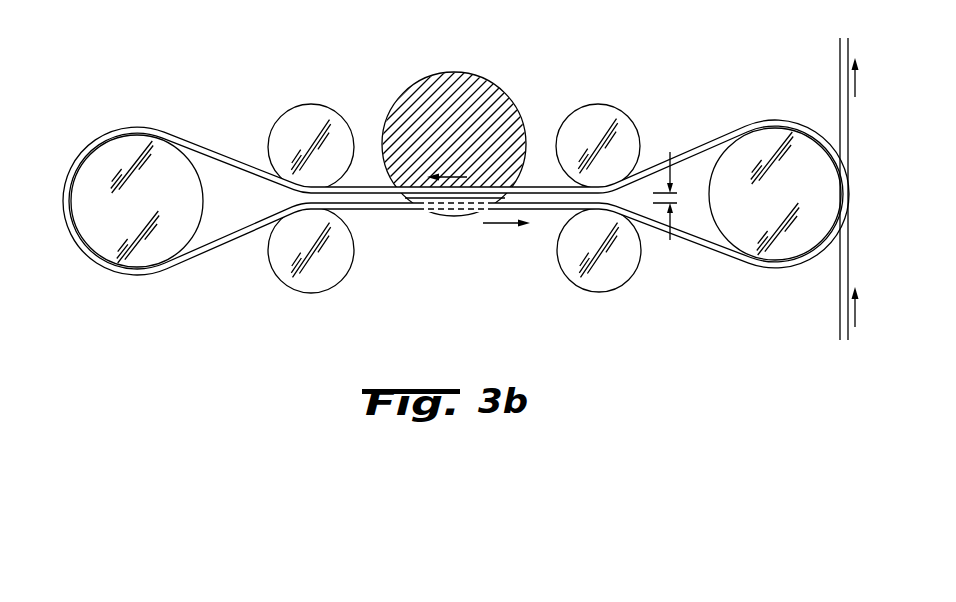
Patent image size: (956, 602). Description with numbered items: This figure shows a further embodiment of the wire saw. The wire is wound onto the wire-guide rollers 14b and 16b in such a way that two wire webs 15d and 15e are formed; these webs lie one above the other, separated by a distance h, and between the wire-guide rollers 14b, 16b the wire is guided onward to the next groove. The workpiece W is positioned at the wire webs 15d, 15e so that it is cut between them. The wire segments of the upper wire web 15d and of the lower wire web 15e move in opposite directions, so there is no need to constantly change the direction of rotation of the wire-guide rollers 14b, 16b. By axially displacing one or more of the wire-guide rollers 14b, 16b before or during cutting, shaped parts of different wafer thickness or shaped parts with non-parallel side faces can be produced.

The wire-guide roller 14b is at (294, 122).
The wire-guide roller 16b is at (142, 258).
The wire web 15d is at (373, 180).
The wire web 15e is at (399, 216).
The wafer W is at (471, 82).
The distance h is at (666, 192).